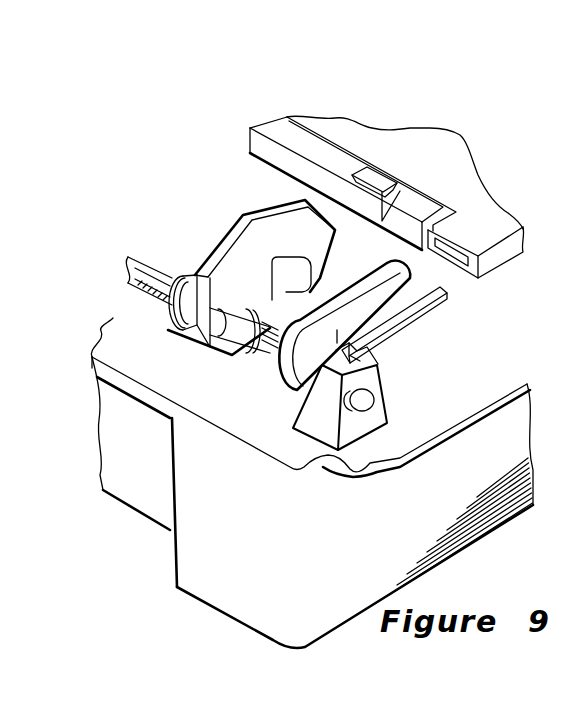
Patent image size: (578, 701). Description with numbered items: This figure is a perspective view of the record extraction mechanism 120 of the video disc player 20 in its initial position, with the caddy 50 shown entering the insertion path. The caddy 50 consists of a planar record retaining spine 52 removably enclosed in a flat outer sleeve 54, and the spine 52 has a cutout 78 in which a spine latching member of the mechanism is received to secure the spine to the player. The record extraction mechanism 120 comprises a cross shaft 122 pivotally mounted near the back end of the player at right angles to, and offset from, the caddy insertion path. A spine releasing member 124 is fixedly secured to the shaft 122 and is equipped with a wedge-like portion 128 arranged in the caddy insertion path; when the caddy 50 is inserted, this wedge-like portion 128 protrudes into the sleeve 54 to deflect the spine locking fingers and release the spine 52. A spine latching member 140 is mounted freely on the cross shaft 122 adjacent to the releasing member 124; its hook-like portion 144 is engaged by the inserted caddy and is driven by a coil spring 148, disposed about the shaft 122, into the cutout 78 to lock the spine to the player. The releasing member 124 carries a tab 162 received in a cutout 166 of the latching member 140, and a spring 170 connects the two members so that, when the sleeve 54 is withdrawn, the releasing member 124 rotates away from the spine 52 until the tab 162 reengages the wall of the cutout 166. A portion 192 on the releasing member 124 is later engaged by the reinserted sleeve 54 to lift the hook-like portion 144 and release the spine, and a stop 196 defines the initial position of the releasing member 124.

The video disc player 20 is at (240, 582).
The caddy 50 is at (392, 111).
The record retaining spine 52 is at (282, 162).
The sleeve 54 is at (508, 252).
The cutout 78 is at (374, 181).
The record extraction mechanism 120 is at (198, 222).
The cross shaft 122 is at (133, 271).
The spine releasing member 124 is at (285, 374).
The wedge-like portion 128 is at (428, 279).
The spine latching member 140 is at (188, 340).
The hook-like portion 144 is at (318, 275).
The coil spring 148 is at (157, 295).
The tab 162 is at (233, 365).
The cutout 166 is at (225, 307).
The spring 170 is at (250, 366).
The portion 192 is at (425, 313).
The stop 196 is at (378, 358).